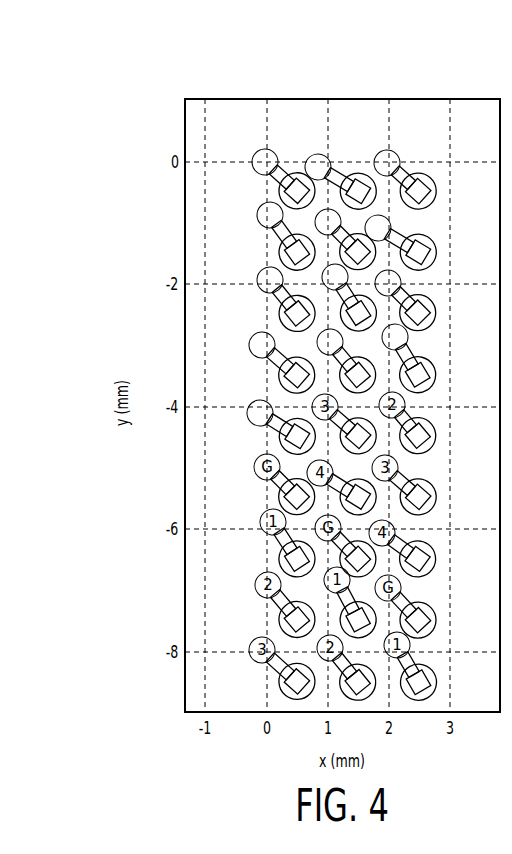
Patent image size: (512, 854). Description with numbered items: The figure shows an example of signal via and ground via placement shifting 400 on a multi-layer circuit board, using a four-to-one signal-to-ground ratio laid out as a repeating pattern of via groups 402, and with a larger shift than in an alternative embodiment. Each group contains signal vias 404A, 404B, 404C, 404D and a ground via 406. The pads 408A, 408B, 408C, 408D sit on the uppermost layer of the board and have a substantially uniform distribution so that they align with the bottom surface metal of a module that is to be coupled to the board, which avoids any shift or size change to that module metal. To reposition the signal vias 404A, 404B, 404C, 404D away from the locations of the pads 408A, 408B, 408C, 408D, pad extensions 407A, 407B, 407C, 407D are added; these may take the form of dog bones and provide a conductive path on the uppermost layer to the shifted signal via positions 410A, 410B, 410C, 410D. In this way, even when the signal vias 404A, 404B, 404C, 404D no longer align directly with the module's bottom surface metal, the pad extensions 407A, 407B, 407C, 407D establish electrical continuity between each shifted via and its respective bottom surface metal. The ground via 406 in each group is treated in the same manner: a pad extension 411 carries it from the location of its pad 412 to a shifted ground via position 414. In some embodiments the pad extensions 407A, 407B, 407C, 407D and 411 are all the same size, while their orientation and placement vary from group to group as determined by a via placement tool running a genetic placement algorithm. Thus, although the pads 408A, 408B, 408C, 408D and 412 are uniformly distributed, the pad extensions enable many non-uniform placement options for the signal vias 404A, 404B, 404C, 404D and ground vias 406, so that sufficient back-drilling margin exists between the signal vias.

The signal via and ground via placement shifting 400 is at (350, 83).
The via groups 402 is at (420, 127).
The signal via 404A is at (250, 197).
The signal via 404B is at (250, 263).
The signal via 404C is at (247, 327).
The signal via 404D is at (247, 400).
The ground via 406 is at (248, 128).
The pad extension 407A is at (280, 233).
The pad extension 407B is at (282, 283).
The pad extension 407C is at (285, 382).
The pad extension 407D is at (273, 427).
The pad 408A is at (316, 247).
The pad 408B is at (315, 305).
The pad 408C is at (308, 405).
The pad 408D is at (303, 440).
The shifted signal via position 410A is at (262, 218).
The shifted signal via position 410B is at (258, 278).
The shifted signal via position 410C is at (250, 348).
The shifted signal via position 410D is at (247, 425).
The pad extension 411 is at (282, 162).
The pad 412 is at (302, 186).
The shifted ground via position 414 is at (270, 150).